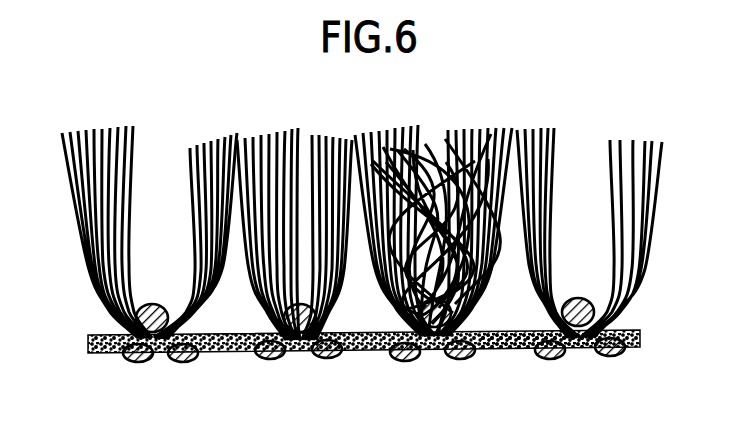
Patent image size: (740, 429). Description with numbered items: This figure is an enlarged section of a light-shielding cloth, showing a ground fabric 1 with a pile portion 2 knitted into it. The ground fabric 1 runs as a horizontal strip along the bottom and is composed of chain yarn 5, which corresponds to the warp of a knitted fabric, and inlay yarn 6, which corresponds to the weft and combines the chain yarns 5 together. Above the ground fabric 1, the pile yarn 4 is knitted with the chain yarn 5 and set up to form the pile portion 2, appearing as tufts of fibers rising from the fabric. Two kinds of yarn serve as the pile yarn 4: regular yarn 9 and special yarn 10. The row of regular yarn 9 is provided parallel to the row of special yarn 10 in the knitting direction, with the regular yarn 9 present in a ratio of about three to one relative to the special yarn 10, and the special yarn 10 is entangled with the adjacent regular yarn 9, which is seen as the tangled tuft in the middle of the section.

The ground fabric 1 is at (391, 348).
The pile portion 2 is at (665, 204).
The pile yarn 4 is at (378, 207).
The chain yarn 5 is at (446, 350).
The inlay yarn 6 is at (512, 352).
The regular yarn 9 is at (606, 210).
The special yarn 10 is at (414, 130).